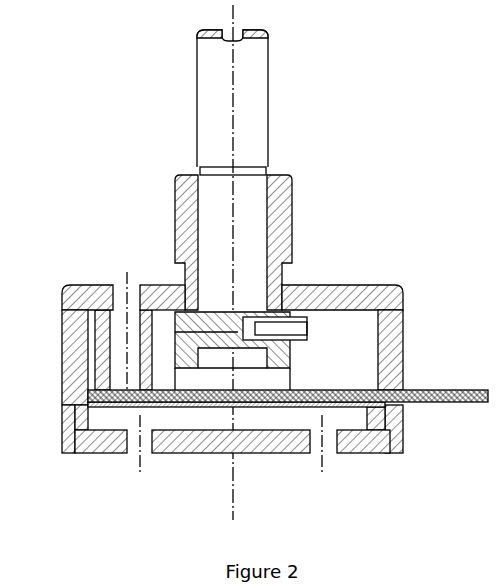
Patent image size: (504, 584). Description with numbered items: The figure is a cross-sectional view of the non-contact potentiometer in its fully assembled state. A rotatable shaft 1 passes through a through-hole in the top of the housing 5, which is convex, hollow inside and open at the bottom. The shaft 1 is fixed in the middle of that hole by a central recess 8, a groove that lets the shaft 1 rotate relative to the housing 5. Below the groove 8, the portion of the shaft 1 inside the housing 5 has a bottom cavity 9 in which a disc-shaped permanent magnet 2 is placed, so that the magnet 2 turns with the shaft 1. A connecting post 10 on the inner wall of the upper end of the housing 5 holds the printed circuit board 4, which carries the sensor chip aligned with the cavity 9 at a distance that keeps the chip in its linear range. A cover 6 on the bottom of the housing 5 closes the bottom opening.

The rotatable shaft 1 is at (268, 112).
The permanent magnet 2 is at (165, 287).
The printed circuit board 4 is at (440, 390).
The housing 5 is at (292, 215).
The cover 6 is at (250, 455).
The central recess 8 is at (197, 167).
The bottom cavity 9 is at (325, 285).
The connecting post 10 is at (62, 322).